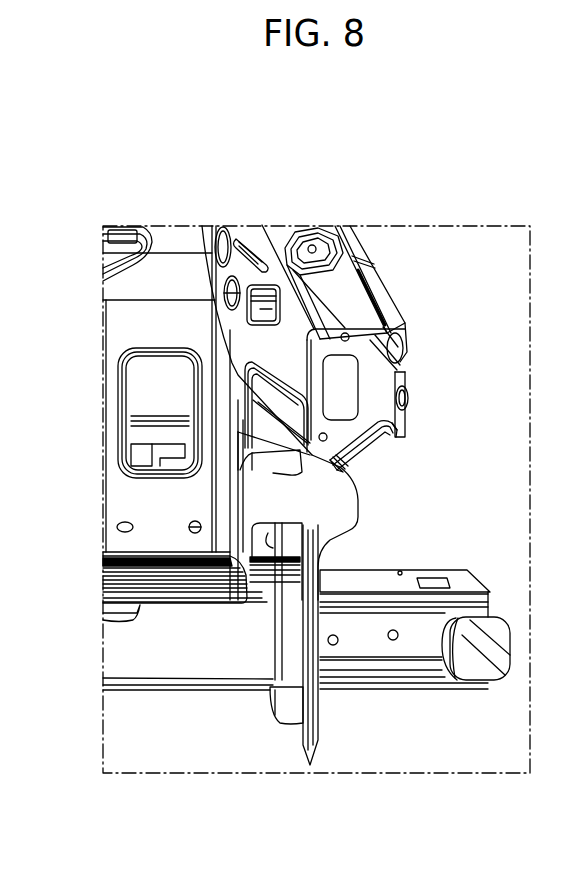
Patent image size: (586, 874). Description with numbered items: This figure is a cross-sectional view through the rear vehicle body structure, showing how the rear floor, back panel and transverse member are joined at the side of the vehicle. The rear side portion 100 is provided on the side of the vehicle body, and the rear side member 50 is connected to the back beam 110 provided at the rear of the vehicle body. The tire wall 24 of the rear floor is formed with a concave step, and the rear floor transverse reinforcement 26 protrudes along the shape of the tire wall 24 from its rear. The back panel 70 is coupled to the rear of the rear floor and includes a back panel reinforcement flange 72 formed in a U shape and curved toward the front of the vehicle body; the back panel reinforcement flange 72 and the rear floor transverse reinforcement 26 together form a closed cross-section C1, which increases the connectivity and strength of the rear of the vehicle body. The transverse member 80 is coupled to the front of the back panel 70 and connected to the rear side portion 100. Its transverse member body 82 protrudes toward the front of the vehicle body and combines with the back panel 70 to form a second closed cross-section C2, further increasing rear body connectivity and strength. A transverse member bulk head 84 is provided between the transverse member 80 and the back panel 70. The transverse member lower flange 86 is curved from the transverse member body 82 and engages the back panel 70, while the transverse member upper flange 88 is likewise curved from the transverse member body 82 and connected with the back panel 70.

The rear side portion 100 is at (132, 497).
The transverse member body 82 is at (257, 340).
The transverse member 80 is at (373, 257).
The transverse member upper flange 88 is at (390, 308).
The transverse member bulk head 84 is at (408, 382).
The closed cross-section C2 is at (400, 412).
The transverse member lower flange 86 is at (358, 467).
The back panel 70 is at (363, 523).
The closed cross-section C1 is at (276, 545).
The tire wall 24 is at (140, 606).
The rear floor transverse reinforcement 26 is at (289, 522).
The rear side member 50 is at (188, 690).
The back panel reinforcement flange 72 is at (277, 710).
The back beam 110 is at (443, 688).